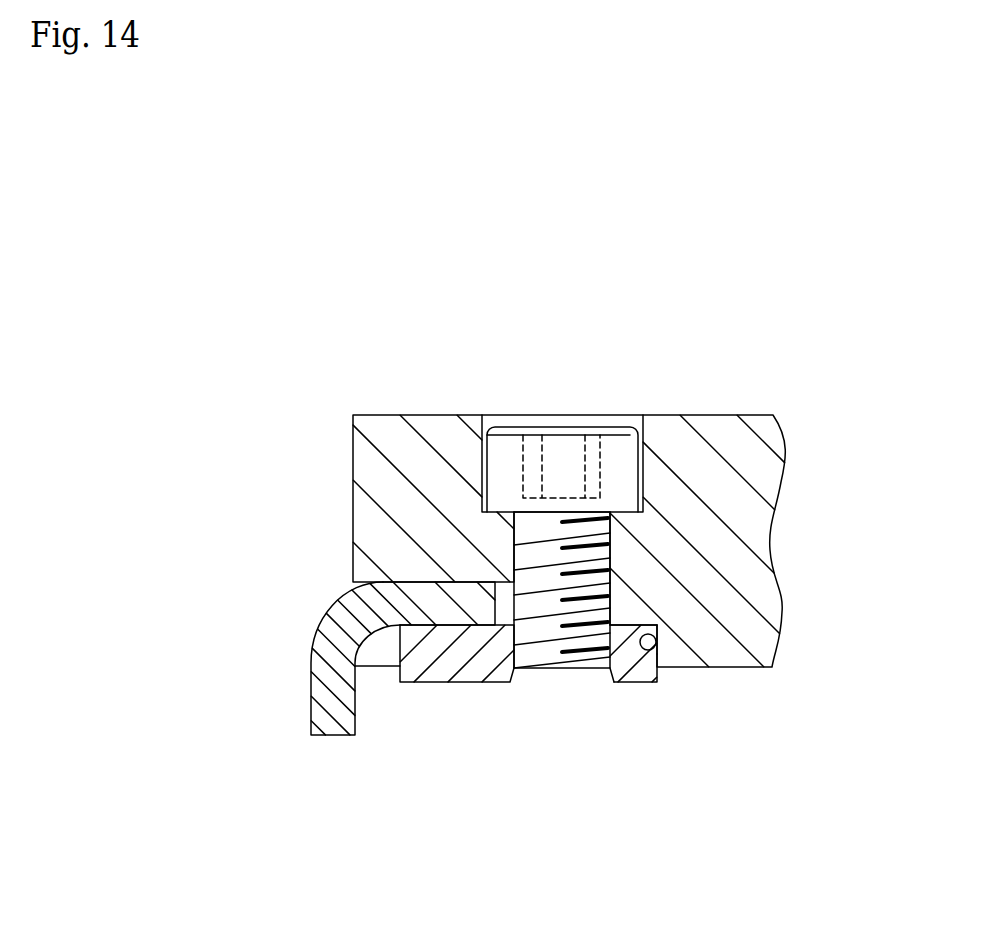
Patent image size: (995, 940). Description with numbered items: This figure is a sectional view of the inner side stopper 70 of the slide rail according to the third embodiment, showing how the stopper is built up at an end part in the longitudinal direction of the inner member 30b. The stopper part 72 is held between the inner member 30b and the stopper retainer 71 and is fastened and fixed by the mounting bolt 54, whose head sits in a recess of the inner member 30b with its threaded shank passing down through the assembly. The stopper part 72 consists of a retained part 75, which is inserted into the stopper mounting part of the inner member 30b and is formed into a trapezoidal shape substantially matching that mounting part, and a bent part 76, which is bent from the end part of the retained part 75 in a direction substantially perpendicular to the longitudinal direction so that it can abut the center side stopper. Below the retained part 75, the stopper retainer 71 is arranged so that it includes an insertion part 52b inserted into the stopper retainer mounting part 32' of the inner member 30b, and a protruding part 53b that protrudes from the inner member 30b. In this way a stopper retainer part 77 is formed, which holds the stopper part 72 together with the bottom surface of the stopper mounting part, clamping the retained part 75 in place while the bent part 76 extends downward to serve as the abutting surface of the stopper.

The inner member 30b is at (738, 488).
The mounting bolt 54 is at (617, 448).
The inner side stopper 70 is at (418, 708).
The stopper part 72 is at (301, 646).
The retained part 75 is at (437, 597).
The bent part 76 is at (335, 700).
The stopper retainer part 77 is at (462, 657).
The stopper retainer 71 is at (648, 741).
The insertion part 52b is at (628, 640).
The protruding part 53b is at (633, 675).
The stopper retainer mounting part 32' is at (752, 646).